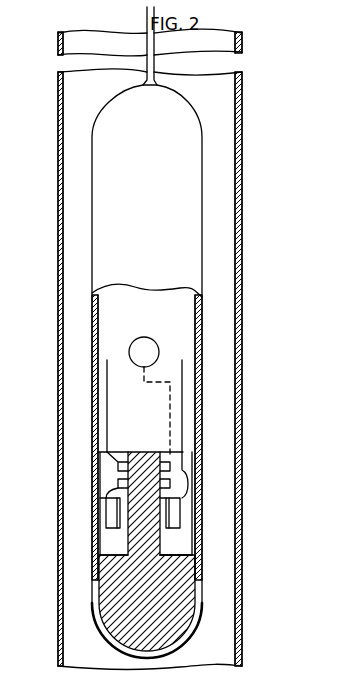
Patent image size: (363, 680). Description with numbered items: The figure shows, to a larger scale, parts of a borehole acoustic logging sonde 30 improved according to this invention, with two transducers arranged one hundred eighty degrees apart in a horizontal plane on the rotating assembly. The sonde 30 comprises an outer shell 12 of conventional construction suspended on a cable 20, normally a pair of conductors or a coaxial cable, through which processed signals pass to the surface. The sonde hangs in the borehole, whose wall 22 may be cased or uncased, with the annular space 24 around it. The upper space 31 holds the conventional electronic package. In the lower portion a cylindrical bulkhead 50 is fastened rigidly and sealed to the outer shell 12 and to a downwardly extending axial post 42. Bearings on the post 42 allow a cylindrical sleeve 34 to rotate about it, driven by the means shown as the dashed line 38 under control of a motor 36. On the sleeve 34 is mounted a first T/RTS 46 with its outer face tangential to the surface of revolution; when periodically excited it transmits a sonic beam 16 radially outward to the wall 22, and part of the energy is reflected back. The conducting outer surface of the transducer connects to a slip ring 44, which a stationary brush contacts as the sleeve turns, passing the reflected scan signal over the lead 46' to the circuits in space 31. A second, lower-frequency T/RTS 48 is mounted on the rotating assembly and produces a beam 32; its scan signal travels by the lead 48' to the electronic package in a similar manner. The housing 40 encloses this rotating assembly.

The outer shell 12 is at (202, 131).
The sonic beam 16 is at (168, 522).
The cable 20 is at (155, 10).
The wall of the borehole 22 is at (242, 207).
The annulus 24 is at (36, 278).
The sonde 30 is at (205, 181).
The space for electronic circuits 31 is at (173, 308).
The beam 32 is at (104, 526).
The sleeve 34 is at (163, 543).
The motor 36 is at (159, 343).
The rotation drive means 38 is at (158, 392).
The housing 40 is at (195, 465).
The axial post 42 is at (147, 550).
The slip ring 44 is at (118, 483).
The first T/RTS 46 is at (221, 517).
The lead 46' is at (231, 406).
The second T/RTS 48 is at (67, 539).
The lead 48' is at (62, 406).
The cylindrical bulkhead 50 is at (128, 417).